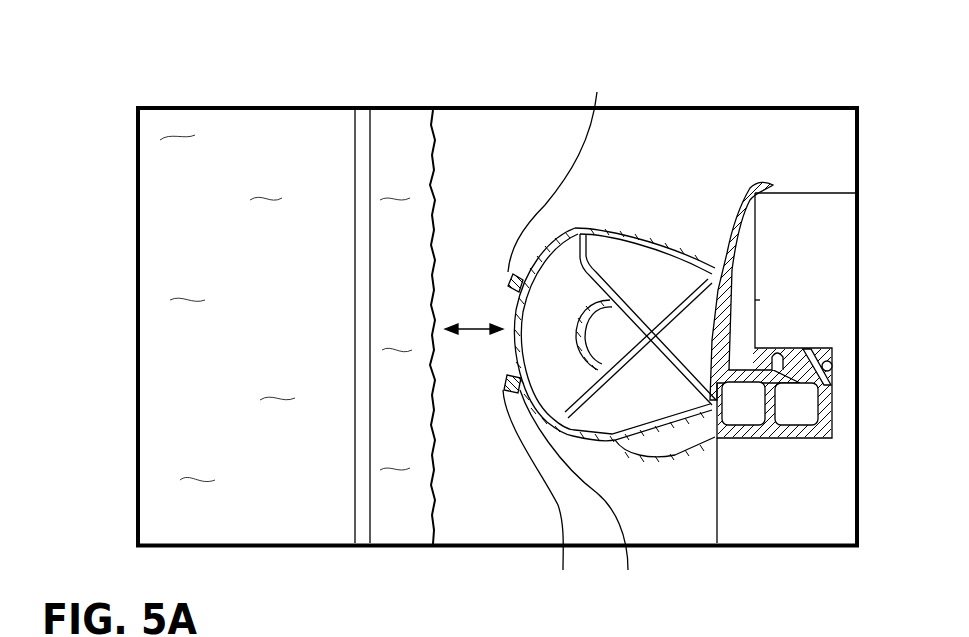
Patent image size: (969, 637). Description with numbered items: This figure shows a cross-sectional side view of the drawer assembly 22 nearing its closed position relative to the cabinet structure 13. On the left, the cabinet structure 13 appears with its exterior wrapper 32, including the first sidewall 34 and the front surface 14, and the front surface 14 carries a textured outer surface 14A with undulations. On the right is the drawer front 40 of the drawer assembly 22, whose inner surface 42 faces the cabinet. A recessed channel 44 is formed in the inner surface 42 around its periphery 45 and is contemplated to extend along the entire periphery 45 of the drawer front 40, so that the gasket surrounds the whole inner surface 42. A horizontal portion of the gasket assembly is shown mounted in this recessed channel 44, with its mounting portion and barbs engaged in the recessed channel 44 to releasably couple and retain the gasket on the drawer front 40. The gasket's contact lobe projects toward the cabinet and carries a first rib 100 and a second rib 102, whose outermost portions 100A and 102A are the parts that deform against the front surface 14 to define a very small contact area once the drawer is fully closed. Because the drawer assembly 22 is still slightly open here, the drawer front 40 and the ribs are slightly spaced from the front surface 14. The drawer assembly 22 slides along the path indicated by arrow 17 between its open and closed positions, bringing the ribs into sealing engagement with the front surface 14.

The cabinet structure 13 is at (98, 137).
The exterior wrapper 32 is at (120, 222).
The first sidewall 34 is at (228, 150).
The front surface 14 is at (395, 135).
The textured outer surface 14A is at (437, 173).
The arrow 17 is at (475, 328).
The outermost portion of the first rib 100A is at (569, 180).
The first rib 100 is at (527, 275).
The outermost portion of the second rib 102A is at (540, 488).
The second rib 102 is at (586, 497).
The periphery 45 is at (733, 227).
The drawer assembly 22 is at (815, 187).
The drawer front 40 is at (828, 248).
The inner surface 42 is at (753, 282).
The recessed channel 44 is at (832, 372).